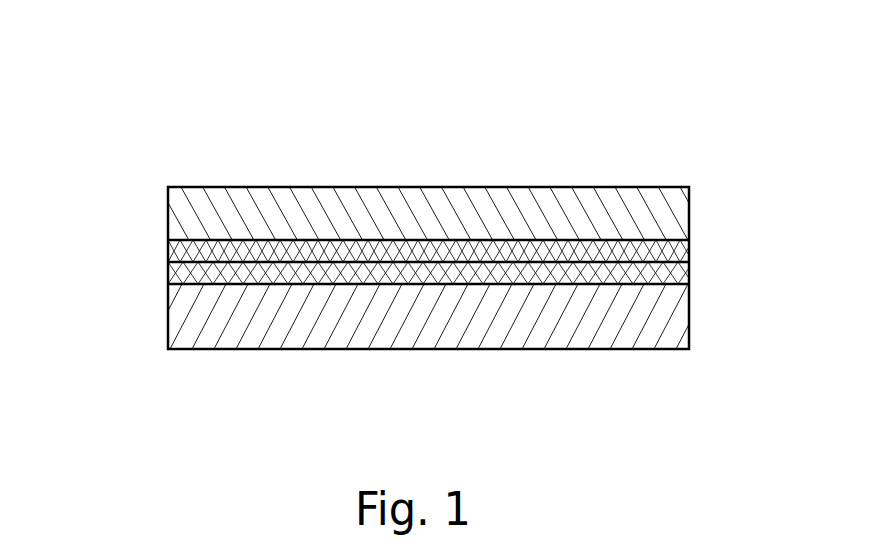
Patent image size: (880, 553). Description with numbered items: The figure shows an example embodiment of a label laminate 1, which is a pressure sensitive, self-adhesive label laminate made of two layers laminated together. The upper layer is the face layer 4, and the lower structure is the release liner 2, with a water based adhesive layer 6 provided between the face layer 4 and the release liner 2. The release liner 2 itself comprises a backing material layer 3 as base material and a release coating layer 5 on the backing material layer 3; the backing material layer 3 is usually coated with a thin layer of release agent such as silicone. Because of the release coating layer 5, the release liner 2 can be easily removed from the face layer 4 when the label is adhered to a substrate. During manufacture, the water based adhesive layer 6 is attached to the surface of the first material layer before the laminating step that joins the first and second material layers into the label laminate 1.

The label laminate 1 is at (411, 233).
The release liner 2 is at (413, 357).
The backing material layer 3 is at (429, 368).
The face layer 4 is at (426, 153).
The release coating layer 5 is at (379, 298).
The adhesive layer 6 is at (377, 241).